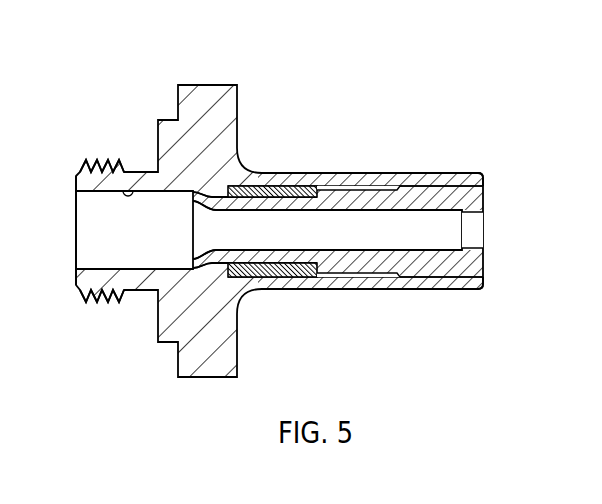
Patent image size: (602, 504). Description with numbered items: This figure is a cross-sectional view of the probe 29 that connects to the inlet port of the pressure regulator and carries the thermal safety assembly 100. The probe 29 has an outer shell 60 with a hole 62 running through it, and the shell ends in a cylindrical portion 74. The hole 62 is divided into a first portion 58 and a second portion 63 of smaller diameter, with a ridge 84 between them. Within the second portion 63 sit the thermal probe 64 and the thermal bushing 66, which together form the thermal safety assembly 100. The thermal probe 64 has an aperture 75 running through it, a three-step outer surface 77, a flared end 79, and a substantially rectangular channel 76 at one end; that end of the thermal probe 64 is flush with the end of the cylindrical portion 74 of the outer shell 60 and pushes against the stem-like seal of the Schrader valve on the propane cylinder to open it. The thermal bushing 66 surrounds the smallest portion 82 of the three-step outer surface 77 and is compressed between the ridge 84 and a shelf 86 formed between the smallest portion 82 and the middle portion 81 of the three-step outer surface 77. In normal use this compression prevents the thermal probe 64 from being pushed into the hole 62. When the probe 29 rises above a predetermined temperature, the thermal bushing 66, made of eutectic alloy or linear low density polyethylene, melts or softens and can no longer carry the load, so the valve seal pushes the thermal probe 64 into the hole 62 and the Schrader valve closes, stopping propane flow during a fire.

The probe 29 is at (205, 66).
The hole 62 is at (83, 210).
The second portion 63 is at (130, 172).
The thermal probe 64 is at (483, 190).
The thermal bushing 66 is at (250, 185).
The flared end 79 is at (193, 212).
The ridge 84 is at (207, 270).
The shelf 86 is at (272, 190).
The smallest portion 82 is at (288, 277).
The middle portion 81 is at (373, 183).
The three-step outer surface 77 is at (347, 174).
The aperture 75 is at (462, 186).
The substantially rectangular channel 76 is at (472, 238).
The thermal safety assembly 100 is at (483, 273).
The first portion 58 is at (387, 278).
The cylindrical portion 74 is at (452, 290).
The outer shell 60 is at (357, 290).